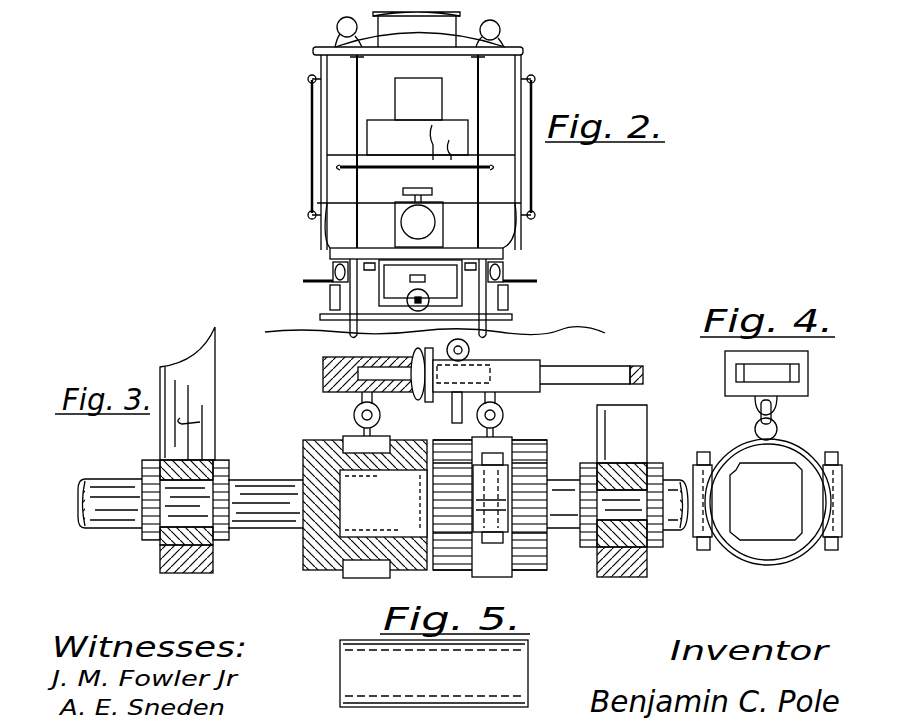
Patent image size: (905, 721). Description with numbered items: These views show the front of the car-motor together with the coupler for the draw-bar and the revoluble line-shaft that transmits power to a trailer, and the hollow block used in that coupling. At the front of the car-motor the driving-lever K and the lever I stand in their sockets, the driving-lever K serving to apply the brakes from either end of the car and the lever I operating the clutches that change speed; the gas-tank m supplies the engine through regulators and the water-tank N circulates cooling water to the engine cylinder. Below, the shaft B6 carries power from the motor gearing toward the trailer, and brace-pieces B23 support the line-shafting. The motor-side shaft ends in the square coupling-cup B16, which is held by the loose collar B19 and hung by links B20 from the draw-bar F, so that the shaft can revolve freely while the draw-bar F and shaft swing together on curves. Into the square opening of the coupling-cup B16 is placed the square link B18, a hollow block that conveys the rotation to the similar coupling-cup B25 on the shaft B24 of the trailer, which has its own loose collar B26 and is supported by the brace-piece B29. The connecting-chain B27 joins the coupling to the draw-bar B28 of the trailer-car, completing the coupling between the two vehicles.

In FIG. 2, the gas-tank m is at (340, 24).
In FIG. 2, the water-tank N is at (499, 35).
In FIG. 2, the driving-lever K is at (423, 142).
In FIG. 2, the lever I is at (448, 140).
In FIG. 2, the brace-pieces B23 is at (420, 290).
In FIG. 3, the brace-pieces B23 is at (604, 438).
In FIG. 3, the draw-bar of the trailer-car B28 is at (342, 370).
In FIG. 3, the draw-bar F is at (469, 381).
In FIG. 4, the draw-bar F is at (792, 360).
In FIG. 3, the connecting-chain B27 is at (353, 416).
In FIG. 3, the links B20 is at (503, 416).
In FIG. 4, the links B20 is at (780, 414).
In FIG. 3, the loose collar B19 is at (492, 447).
In FIG. 4, the loose collar B19 is at (833, 470).
In FIG. 3, the shaft B24 is at (122, 508).
In FIG. 3, the brace-piece B29 is at (185, 418).
In FIG. 3, the coupling-cup B25 is at (330, 556).
In FIG. 3, the loose collar B26 is at (370, 568).
In FIG. 3, the square link B18 is at (408, 508).
In FIG. 5, the square link B18 is at (380, 690).
In FIG. 3, the square coupling-cup B16 is at (545, 572).
In FIG. 4, the square coupling-cup B16 is at (770, 553).
In FIG. 3, the shaft B6 is at (678, 528).